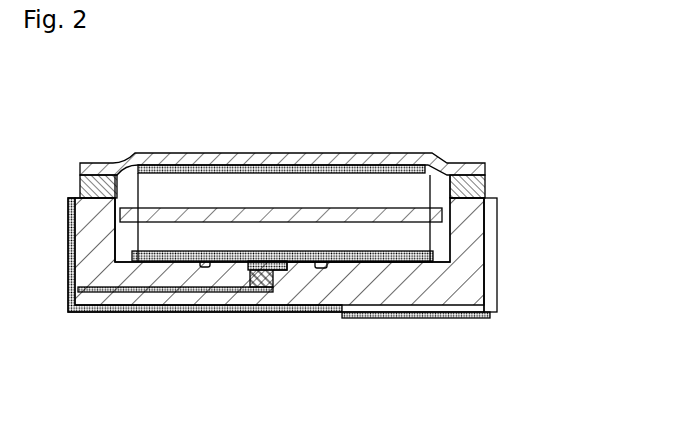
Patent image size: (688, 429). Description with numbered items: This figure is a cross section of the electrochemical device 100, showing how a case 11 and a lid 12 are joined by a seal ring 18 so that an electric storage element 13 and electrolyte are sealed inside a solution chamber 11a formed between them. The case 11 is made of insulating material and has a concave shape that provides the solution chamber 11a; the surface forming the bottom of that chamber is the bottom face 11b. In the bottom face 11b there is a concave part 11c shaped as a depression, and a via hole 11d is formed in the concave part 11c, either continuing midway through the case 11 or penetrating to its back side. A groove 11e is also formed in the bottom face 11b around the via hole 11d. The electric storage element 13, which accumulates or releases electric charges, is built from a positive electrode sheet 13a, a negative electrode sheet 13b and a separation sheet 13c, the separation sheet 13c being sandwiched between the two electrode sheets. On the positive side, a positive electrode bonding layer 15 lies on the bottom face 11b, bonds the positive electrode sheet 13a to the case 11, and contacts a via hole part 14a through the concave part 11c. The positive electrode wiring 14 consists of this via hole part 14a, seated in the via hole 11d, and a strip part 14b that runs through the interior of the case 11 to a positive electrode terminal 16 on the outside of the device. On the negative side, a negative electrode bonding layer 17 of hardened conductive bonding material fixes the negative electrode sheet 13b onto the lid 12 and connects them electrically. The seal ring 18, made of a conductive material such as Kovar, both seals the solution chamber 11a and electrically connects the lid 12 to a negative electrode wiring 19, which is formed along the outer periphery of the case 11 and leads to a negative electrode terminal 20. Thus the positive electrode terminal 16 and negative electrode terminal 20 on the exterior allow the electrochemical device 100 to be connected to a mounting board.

The electrochemical device 100 is at (453, 126).
The case 11 is at (68, 240).
The solution chamber 11a is at (130, 158).
The bottom face 11b is at (132, 313).
The concave part 11c is at (300, 270).
The via hole 11d is at (282, 275).
The groove 11e is at (200, 314).
The lid 12 is at (80, 168).
The electric storage element 13 is at (150, 104).
The positive electrode sheet 13a is at (168, 250).
The negative electrode sheet 13b is at (237, 172).
The separation sheet 13c is at (204, 207).
The positive electrode wiring 14 is at (203, 366).
The via hole part 14a is at (256, 292).
The strip part 14b is at (252, 285).
The positive electrode bonding layer 15 is at (391, 266).
The positive electrode terminal 16 is at (98, 313).
The negative electrode bonding layer 17 is at (285, 152).
The seal ring 18 is at (80, 188).
The negative electrode wiring 19 is at (498, 230).
The negative electrode terminal 20 is at (436, 318).